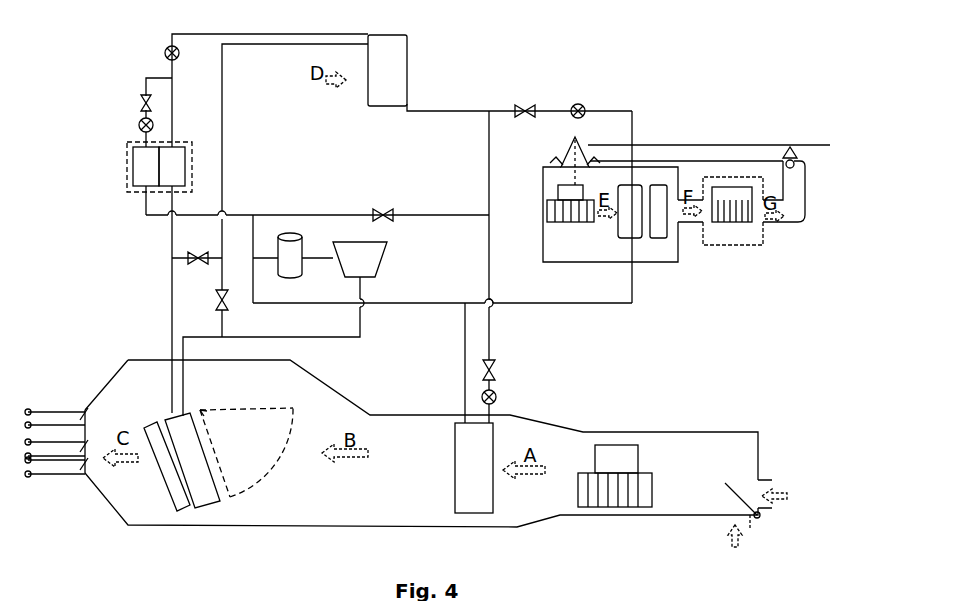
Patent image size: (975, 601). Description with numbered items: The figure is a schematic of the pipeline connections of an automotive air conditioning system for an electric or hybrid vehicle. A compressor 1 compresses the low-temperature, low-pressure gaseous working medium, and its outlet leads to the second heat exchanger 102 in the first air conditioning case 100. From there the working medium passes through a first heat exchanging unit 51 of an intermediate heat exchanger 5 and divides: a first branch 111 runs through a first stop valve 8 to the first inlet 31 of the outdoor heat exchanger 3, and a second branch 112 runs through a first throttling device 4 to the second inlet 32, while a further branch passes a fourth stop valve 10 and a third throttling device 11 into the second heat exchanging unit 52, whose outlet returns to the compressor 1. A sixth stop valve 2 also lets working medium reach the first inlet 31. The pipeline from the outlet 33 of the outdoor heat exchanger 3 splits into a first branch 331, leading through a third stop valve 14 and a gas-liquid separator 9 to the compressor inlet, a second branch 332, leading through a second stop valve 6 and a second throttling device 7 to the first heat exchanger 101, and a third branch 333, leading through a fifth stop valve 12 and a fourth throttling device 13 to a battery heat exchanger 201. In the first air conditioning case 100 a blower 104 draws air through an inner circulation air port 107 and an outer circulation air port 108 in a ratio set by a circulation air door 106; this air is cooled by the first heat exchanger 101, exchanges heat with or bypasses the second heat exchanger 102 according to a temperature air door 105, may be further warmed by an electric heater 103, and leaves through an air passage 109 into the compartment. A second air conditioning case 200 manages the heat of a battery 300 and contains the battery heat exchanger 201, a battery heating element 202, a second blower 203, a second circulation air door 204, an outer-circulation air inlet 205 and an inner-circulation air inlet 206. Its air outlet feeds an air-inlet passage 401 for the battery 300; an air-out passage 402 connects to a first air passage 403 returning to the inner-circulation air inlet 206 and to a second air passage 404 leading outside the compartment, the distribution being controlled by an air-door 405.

The compressor 1 is at (365, 242).
The sixth stop valve 2 is at (213, 278).
The outdoor heat exchanger 3 is at (394, 70).
The first throttling device 4 is at (181, 96).
The intermediate heat exchanger 5 is at (166, 178).
The second stop valve 6 is at (496, 372).
The second throttling device 7 is at (496, 401).
The first stop valve 8 is at (198, 248).
The gas-liquid separator 9 is at (299, 253).
The fourth stop valve 10 is at (157, 98).
The third throttling device 11 is at (157, 131).
The fifth stop valve 12 is at (535, 102).
The fourth throttling device 13 is at (585, 102).
The third stop valve 14 is at (380, 205).
The first inlet 31 is at (295, 127).
The second inlet 32 is at (270, 40).
The outlet 33 is at (448, 102).
The first heat exchanging unit 51 is at (172, 166).
The second heat exchanging unit 52 is at (146, 166).
The first air conditioning case 100 is at (421, 443).
The first heat exchanger 101 is at (462, 476).
The second heat exchanger 102 is at (197, 471).
The electric heater 103 is at (167, 473).
The blower 104 is at (598, 484).
The temperature air door 105 is at (246, 461).
The circulation air door 106 is at (731, 497).
The inner circulation air port 107 is at (722, 515).
The outer circulation air port 108 is at (777, 483).
The air passage 109 is at (56, 433).
The first branch 111 is at (195, 270).
The second branch 112 is at (152, 299).
The second air conditioning case 200 is at (610, 225).
The battery heat exchanger 201 is at (622, 222).
The battery heating element 202 is at (659, 224).
The second blower 203 is at (570, 215).
The second circulation air door 204 is at (581, 163).
The outer-circulation air inlet 205 is at (542, 152).
The inner-circulation air inlet 206 is at (607, 153).
The battery 300 is at (733, 213).
The first branch 331 is at (317, 205).
The second branch 332 is at (510, 235).
The refrigerant line 333 is at (558, 99).
The air-inlet passage 401 is at (693, 224).
The air-out passage 402 is at (803, 206).
The first air passage 403 is at (693, 171).
The second air passage 404 is at (820, 175).
The air-door 405 is at (709, 136).